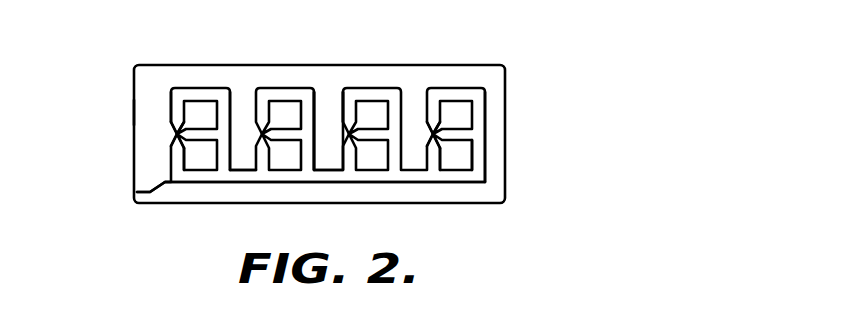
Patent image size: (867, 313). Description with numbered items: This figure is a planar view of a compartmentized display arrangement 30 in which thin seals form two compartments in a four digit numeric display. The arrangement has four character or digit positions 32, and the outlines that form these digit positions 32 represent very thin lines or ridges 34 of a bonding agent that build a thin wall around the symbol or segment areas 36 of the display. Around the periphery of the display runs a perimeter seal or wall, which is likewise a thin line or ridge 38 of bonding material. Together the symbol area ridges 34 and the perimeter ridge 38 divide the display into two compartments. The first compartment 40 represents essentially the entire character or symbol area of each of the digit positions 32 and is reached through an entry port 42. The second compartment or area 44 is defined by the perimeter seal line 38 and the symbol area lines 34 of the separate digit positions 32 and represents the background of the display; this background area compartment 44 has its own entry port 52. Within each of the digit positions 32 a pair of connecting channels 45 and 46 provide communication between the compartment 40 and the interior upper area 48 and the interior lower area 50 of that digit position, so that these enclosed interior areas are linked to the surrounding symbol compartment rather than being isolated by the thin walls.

The compartmentized display arrangement 30 is at (95, 45).
The digit positions 32 is at (309, 101).
The thin lines or ridges 34 is at (192, 160).
The symbol or segment areas 36 is at (171, 98).
The perimeter seal ridge 38 is at (508, 83).
The first compartment 40 is at (325, 214).
The entry port 42 is at (137, 187).
The second compartment 44 is at (312, 85).
The connecting channel 45 is at (176, 127).
The connecting channel 46 is at (172, 148).
The interior upper area 48 is at (200, 105).
The interior lower area 50 is at (275, 160).
The entry port 52 is at (137, 112).